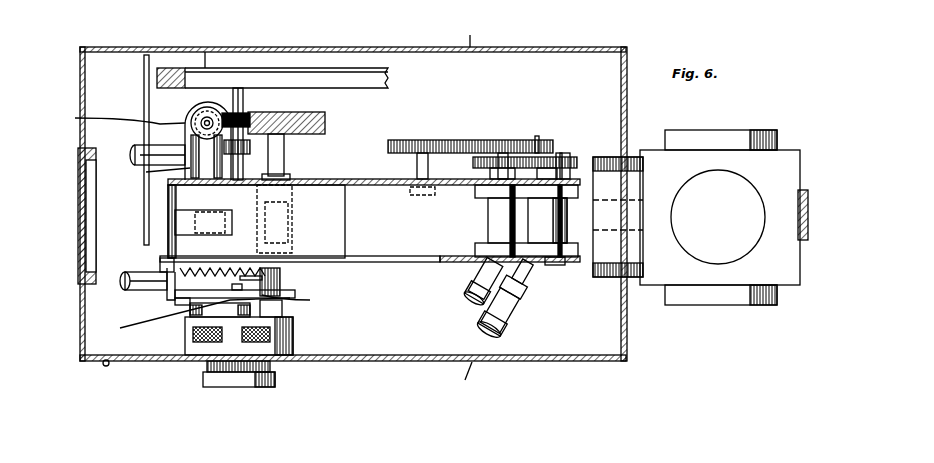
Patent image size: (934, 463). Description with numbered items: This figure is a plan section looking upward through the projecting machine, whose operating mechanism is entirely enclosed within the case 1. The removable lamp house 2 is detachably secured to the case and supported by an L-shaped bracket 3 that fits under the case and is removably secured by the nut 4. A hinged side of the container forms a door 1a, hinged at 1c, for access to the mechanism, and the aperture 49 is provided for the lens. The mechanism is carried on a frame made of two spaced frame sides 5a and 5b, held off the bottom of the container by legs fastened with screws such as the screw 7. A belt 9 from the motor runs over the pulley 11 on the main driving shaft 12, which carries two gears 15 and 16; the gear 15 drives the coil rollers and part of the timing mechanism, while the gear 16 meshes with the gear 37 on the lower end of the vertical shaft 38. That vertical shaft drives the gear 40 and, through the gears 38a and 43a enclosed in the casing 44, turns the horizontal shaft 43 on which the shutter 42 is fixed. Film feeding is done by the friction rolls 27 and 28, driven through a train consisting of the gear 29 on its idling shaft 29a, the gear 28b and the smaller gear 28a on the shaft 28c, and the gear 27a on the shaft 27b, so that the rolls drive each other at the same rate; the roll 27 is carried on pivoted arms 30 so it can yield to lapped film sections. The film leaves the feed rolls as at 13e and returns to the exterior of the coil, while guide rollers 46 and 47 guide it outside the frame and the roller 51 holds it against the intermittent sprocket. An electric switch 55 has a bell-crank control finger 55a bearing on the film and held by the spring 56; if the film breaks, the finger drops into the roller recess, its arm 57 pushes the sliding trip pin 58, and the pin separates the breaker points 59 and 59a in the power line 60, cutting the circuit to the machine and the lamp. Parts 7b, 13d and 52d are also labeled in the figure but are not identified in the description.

The case 1 is at (415, 340).
The door 1a is at (464, 380).
The hinge 1c is at (100, 366).
The removable lamp house 2 is at (100, 98).
The L-shaped bracket 3 is at (118, 100).
The nut 4 is at (350, 65).
The frame side 5a is at (325, 179).
The frame side 5b is at (418, 262).
The screw 7 is at (103, 352).
The housing top wall 7b is at (490, 33).
The belt 9 is at (386, 76).
The pulley 11 is at (199, 52).
The main driving shaft 12 is at (245, 108).
The bearing block 13d is at (422, 195).
The film 13e is at (580, 232).
The gear 15 is at (285, 150).
The gear 16 is at (265, 113).
The friction roll 27 is at (575, 220).
The gear 27a is at (562, 153).
The shaft 27b is at (552, 265).
The friction roll 28 is at (488, 226).
The smaller gear 28a is at (473, 164).
The gear 28b is at (502, 153).
The shaft 28c is at (490, 172).
The gear 29 is at (428, 140).
The idling shaft 29a is at (417, 166).
The pivoted arms 30 is at (537, 136).
The gear 37 is at (236, 112).
The vertical shaft 38 is at (190, 120).
The gear 38a is at (112, 119).
The gear 40 is at (326, 122).
The shutter 42 is at (144, 203).
The horizontal shaft 43 is at (158, 150).
The gear 43a is at (146, 178).
The casing 44 is at (200, 112).
The guide roller 46 is at (516, 318).
The guide roller 47 is at (480, 300).
The aperture 49 is at (78, 244).
The roller 51 is at (292, 212).
The coil housing 52d is at (294, 336).
The electric switch 55 is at (190, 318).
The control finger 55a is at (232, 222).
The spring 56 is at (168, 268).
The arm 57 is at (145, 272).
The sliding trip pin 58 is at (180, 290).
The breaker point 59 is at (288, 291).
The breaker point 59a is at (280, 280).
The power line 60 is at (320, 312).